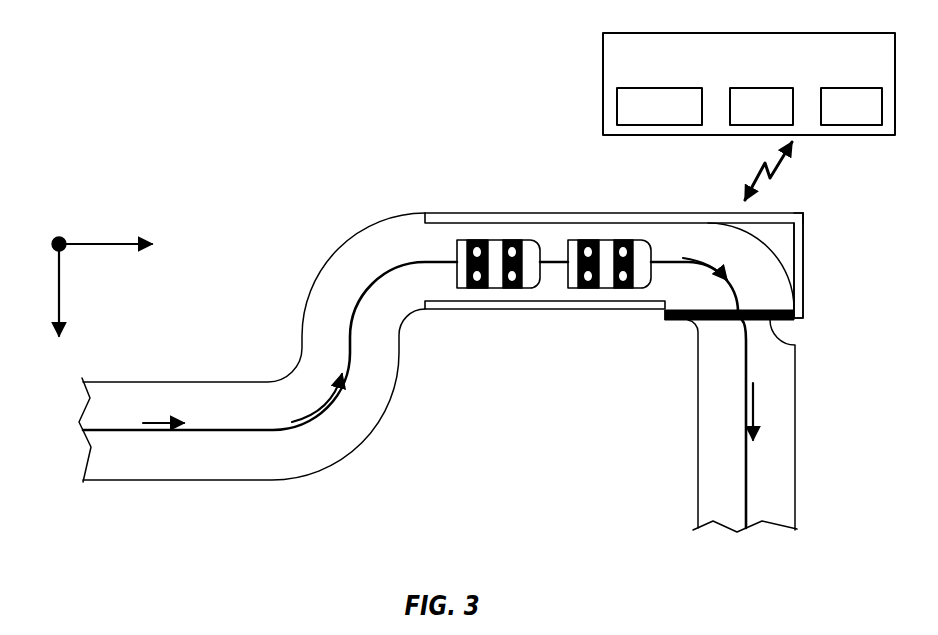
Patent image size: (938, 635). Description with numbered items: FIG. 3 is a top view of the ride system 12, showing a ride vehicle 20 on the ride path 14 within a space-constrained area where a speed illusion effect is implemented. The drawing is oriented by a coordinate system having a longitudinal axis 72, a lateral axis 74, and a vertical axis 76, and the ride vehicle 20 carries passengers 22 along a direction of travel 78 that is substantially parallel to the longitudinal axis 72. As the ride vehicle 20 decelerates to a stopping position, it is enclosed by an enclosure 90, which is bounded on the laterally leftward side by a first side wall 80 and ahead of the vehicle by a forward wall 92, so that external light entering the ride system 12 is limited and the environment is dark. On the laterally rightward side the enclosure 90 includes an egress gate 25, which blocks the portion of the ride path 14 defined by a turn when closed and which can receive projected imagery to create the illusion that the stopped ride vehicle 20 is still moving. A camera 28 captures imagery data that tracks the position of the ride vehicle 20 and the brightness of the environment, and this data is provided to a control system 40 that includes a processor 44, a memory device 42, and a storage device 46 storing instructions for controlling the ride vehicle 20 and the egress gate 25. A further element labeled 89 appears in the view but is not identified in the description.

The ride system 12 is at (160, 157).
The ride path 14 is at (411, 262).
The ride vehicle 20 is at (539, 255).
The passengers 22 is at (512, 240).
The egress gate 25 is at (770, 320).
The camera 28 is at (531, 310).
The control system 40 is at (750, 33).
The memory device 42 is at (658, 88).
The processor 44 is at (852, 88).
The storage device 46 is at (762, 88).
The longitudinal axis 72 is at (130, 247).
The lateral axis 74 is at (55, 295).
The vertical axis 76 is at (67, 233).
The direction of travel 78 is at (172, 421).
The first side wall 80 is at (695, 213).
The outer bend wall 89 is at (735, 255).
The enclosure 90 is at (816, 212).
The forward wall 92 is at (805, 268).